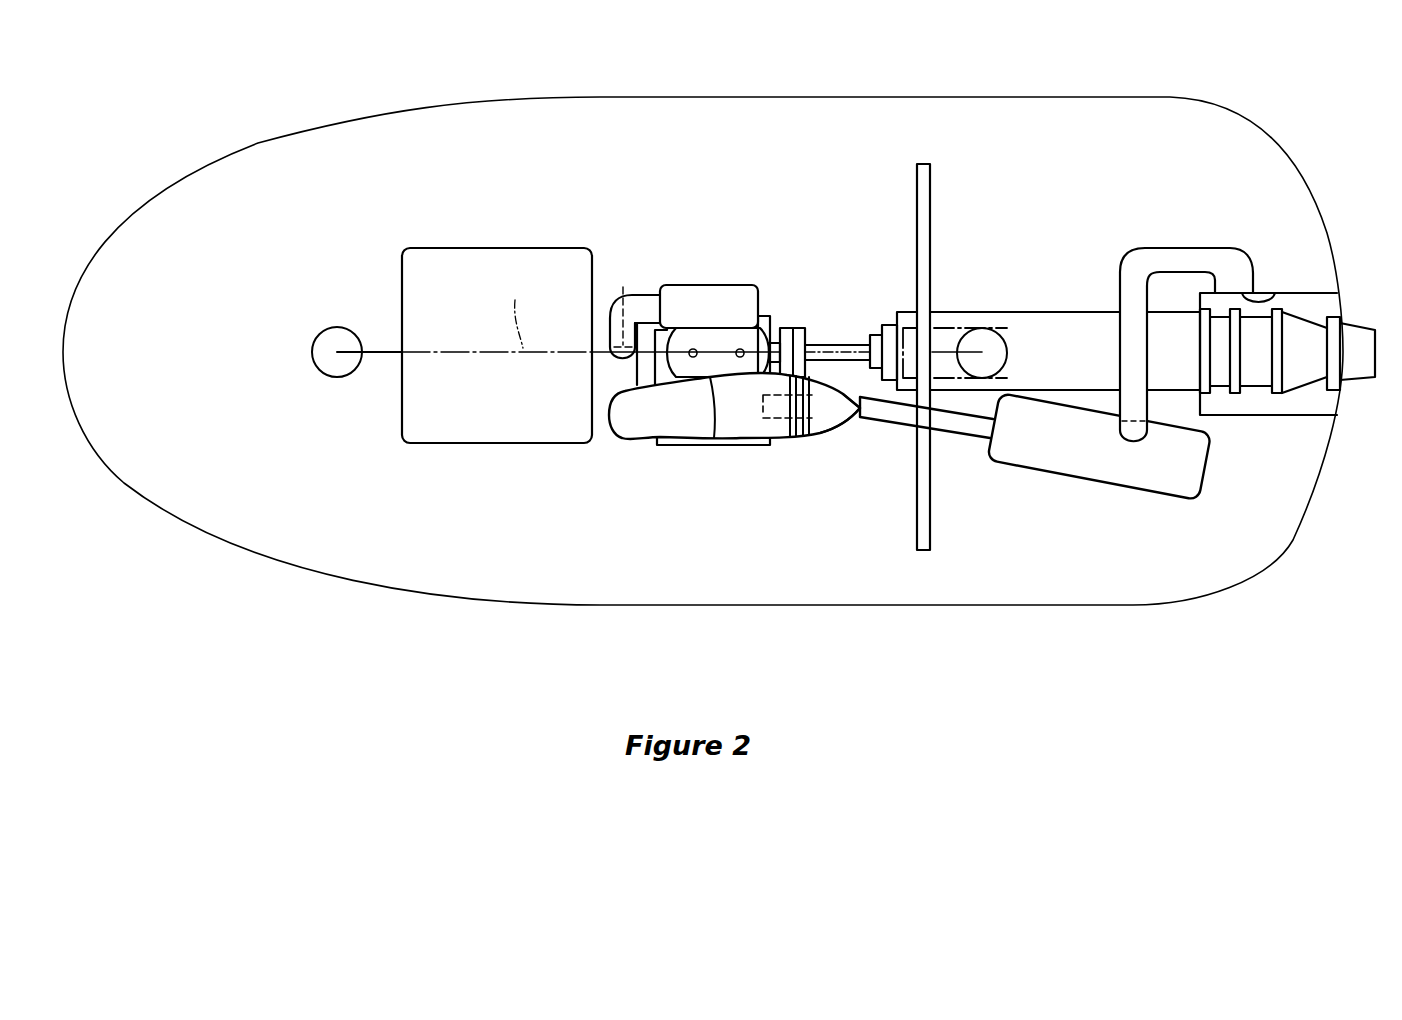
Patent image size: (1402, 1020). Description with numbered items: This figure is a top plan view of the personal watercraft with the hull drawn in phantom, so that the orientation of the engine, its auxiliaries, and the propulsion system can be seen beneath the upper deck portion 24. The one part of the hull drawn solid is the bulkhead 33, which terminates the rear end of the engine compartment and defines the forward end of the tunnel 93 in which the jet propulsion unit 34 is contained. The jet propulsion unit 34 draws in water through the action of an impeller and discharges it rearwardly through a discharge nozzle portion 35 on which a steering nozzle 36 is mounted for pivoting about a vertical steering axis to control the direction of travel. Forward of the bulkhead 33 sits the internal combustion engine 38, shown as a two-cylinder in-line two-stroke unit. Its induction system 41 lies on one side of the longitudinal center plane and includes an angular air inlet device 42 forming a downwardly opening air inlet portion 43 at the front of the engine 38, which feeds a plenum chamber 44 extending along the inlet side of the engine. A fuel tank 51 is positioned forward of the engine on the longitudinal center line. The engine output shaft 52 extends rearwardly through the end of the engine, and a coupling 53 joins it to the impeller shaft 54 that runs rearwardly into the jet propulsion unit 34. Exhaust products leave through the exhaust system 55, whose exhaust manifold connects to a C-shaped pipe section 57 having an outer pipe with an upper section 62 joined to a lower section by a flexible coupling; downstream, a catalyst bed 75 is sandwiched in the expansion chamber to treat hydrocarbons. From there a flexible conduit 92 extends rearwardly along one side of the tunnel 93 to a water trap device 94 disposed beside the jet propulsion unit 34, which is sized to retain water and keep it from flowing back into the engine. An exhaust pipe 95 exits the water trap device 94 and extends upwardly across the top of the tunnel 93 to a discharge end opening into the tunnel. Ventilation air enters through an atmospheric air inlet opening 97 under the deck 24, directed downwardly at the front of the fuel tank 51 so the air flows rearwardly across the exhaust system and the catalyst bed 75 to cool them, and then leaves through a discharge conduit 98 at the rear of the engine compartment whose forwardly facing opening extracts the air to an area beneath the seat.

The upper deck portion 24 is at (1085, 97).
The bulkhead 33 is at (932, 204).
The jet propulsion unit 34 is at (1012, 310).
The discharge nozzle portion 35 is at (1305, 393).
The steering nozzle 36 is at (1362, 316).
The internal combustion engine 38 is at (697, 457).
The induction system 41 is at (689, 286).
The air inlet device 42 is at (640, 292).
The air inlet portion 43 is at (624, 292).
The plenum chamber 44 is at (735, 293).
The fuel tank 51 is at (438, 445).
The output shaft 52 is at (775, 342).
The coupling 53 is at (802, 327).
The impeller shaft 54 is at (836, 376).
The exhaust system 55 is at (627, 445).
The C-shaped pipe section 57 is at (615, 440).
The upper section 62 is at (686, 420).
The catalyst bed 75 is at (763, 417).
The flexible conduit 92 is at (900, 421).
The tunnel 93 is at (1258, 294).
The water trap device 94 is at (1064, 488).
The exhaust pipe 95 is at (1183, 248).
The atmospheric air inlet opening 97 is at (335, 322).
The discharge conduit 98 is at (885, 323).